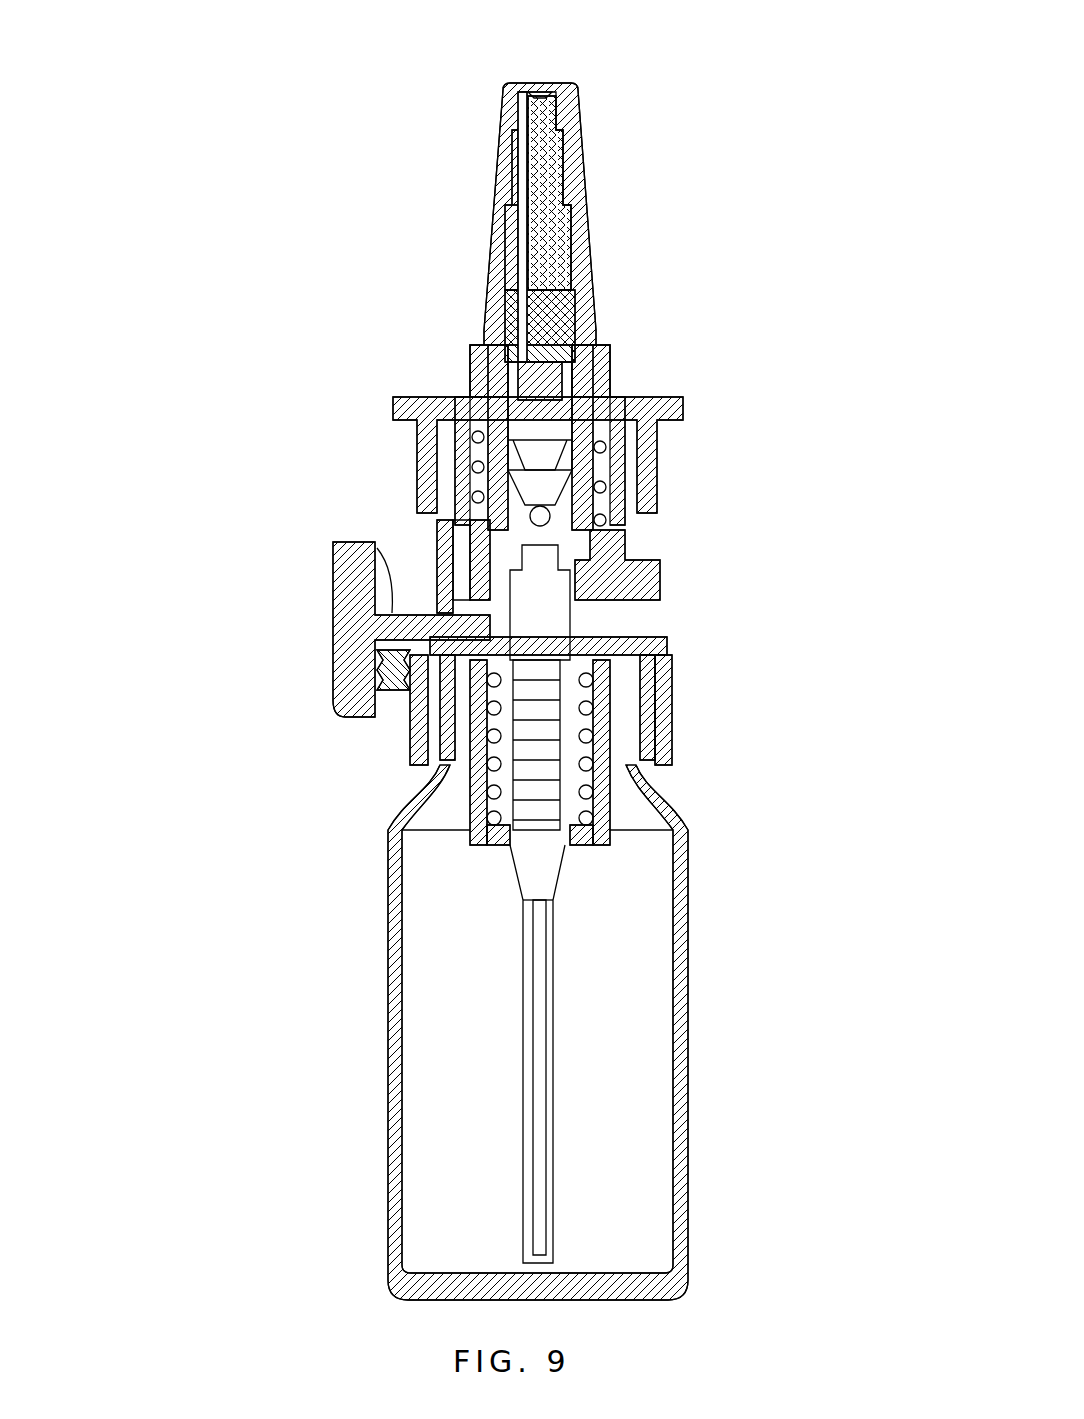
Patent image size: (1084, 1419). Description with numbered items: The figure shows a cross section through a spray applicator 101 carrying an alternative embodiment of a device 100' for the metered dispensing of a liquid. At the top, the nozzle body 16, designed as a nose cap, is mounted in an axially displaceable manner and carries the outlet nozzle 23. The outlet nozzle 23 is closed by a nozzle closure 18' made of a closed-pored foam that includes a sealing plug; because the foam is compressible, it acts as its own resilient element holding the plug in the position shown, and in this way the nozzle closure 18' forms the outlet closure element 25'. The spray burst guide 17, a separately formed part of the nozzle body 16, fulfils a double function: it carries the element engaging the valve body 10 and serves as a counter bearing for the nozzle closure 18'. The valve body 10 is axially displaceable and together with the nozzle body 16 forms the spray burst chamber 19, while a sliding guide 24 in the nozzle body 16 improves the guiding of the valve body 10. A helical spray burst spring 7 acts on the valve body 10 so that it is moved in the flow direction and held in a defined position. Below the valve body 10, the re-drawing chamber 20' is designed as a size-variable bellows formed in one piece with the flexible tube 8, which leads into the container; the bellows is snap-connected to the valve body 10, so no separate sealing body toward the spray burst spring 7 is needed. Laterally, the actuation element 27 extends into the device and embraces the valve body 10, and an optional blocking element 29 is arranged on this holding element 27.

The spray burst spring 7 is at (582, 780).
The flexible tube 8 is at (555, 922).
The valve body 10 is at (570, 540).
The nozzle body 16 is at (505, 120).
The spray burst guide 17 is at (548, 318).
The nozzle closure 18' is at (311, 193).
The spray burst chamber 19 is at (537, 420).
The re-drawing chamber 20' is at (728, 687).
The outlet nozzle 23 is at (540, 88).
The sliding guide 24 is at (595, 417).
The outlet closure element 25' is at (583, 356).
The actuation element 27 is at (425, 613).
The blocking element 29 is at (463, 553).
The device 100' is at (819, 384).
The spray applicator 101 is at (843, 97).